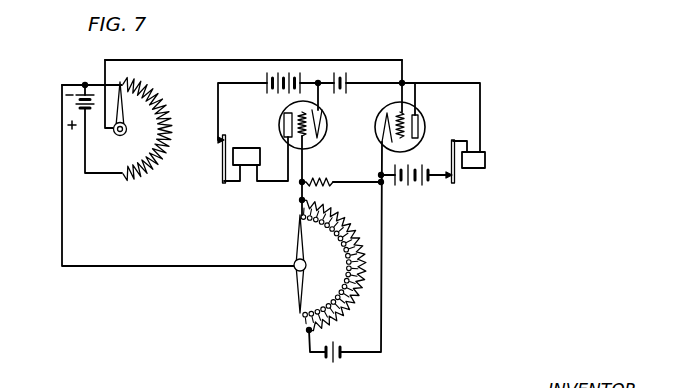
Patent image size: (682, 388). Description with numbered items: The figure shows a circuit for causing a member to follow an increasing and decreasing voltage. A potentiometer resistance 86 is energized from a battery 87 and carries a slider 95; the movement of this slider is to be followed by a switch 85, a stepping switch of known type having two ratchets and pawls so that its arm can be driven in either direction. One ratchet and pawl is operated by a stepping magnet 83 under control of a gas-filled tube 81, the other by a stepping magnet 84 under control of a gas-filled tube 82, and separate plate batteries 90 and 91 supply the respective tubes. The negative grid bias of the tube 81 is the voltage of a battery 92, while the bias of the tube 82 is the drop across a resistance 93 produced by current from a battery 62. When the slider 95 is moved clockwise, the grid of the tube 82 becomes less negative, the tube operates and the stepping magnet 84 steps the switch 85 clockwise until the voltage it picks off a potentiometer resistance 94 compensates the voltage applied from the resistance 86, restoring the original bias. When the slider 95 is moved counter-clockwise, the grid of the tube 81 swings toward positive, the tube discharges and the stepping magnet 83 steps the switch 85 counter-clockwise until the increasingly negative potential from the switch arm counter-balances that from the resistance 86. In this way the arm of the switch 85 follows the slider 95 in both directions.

The battery 62 is at (326, 358).
The gas-filled tube 81 is at (327, 122).
The gas-filled tube 82 is at (425, 124).
The stepping magnet 83 is at (248, 148).
The stepping magnet 84 is at (487, 161).
The switch 85 is at (296, 243).
The potentiometer resistance 86 is at (170, 126).
The battery 87 is at (66, 104).
The plate battery 90 is at (281, 70).
The plate battery 91 is at (425, 181).
The battery 92 is at (341, 70).
The resistance 93 is at (334, 178).
The potentiometer resistance 94 is at (349, 222).
The slider 95 is at (124, 110).